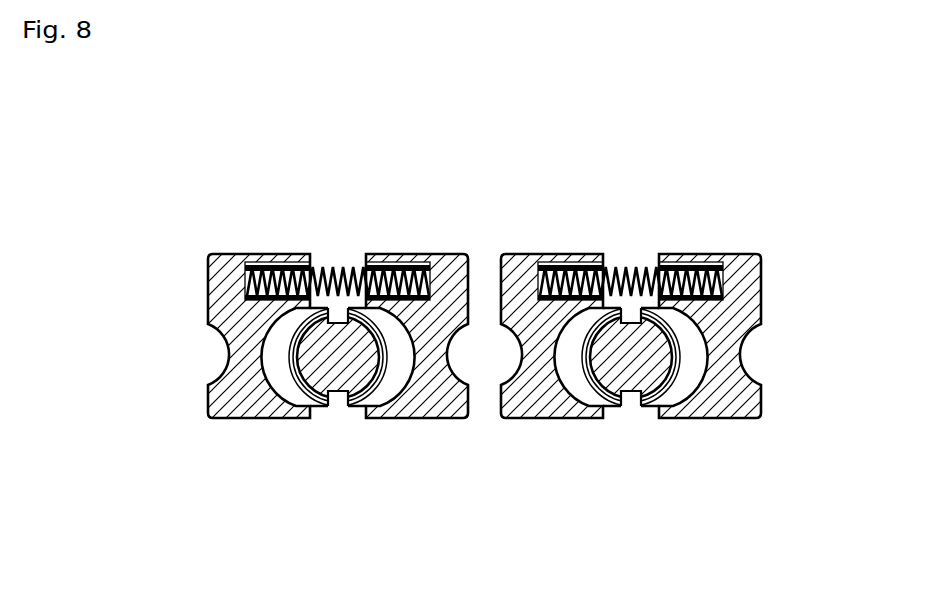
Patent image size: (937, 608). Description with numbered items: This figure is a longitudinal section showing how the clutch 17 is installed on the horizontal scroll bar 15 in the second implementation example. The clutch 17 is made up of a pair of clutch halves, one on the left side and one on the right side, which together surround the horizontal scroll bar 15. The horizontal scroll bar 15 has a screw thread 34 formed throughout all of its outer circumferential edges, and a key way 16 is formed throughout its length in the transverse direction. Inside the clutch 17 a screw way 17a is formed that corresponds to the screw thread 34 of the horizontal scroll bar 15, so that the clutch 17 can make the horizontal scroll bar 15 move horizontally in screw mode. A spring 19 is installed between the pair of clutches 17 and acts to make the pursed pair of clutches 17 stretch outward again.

The horizontal scroll bar 15 is at (321, 383).
The key way 16 is at (628, 392).
The clutch 17 is at (250, 403).
The screw way 17a is at (278, 331).
The spring 19 is at (625, 267).
The screw thread 34 is at (383, 356).